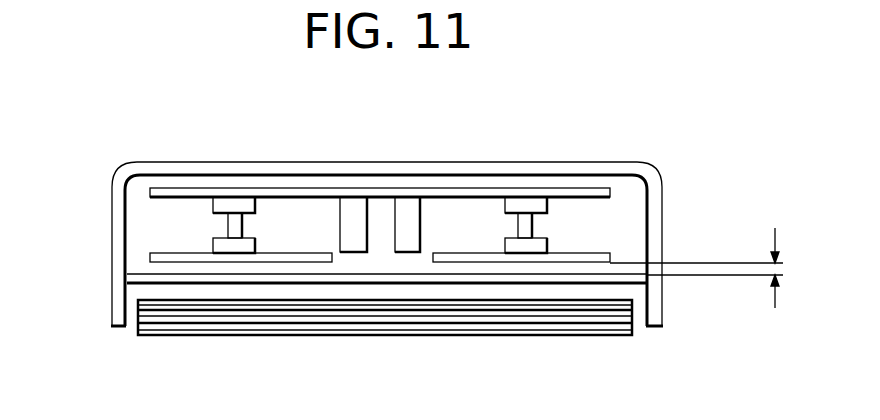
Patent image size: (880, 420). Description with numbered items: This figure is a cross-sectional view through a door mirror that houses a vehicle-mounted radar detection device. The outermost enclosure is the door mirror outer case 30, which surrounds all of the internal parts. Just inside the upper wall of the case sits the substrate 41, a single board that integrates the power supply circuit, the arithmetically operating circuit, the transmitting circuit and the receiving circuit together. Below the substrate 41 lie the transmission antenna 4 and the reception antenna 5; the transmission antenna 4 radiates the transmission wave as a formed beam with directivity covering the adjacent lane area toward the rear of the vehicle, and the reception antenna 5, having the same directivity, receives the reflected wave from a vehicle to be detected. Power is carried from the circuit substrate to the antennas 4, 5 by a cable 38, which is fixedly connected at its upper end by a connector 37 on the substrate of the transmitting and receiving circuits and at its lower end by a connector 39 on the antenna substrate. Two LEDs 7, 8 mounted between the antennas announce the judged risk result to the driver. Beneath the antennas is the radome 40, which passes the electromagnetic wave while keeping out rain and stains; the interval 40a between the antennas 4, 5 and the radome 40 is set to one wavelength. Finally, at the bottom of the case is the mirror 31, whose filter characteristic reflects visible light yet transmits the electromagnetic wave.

The door mirror outer case 30 is at (131, 166).
The substrate 41 is at (150, 191).
The connector 37 is at (213, 206).
The cable 38 is at (228, 224).
The connector 39 is at (213, 246).
The reception antenna 5 is at (178, 262).
The transmission antenna 4 is at (482, 262).
The LED 8 is at (352, 252).
The LED 7 is at (405, 252).
The radome 40 is at (364, 284).
The mirror 31 is at (632, 308).
The interval 40a is at (722, 274).